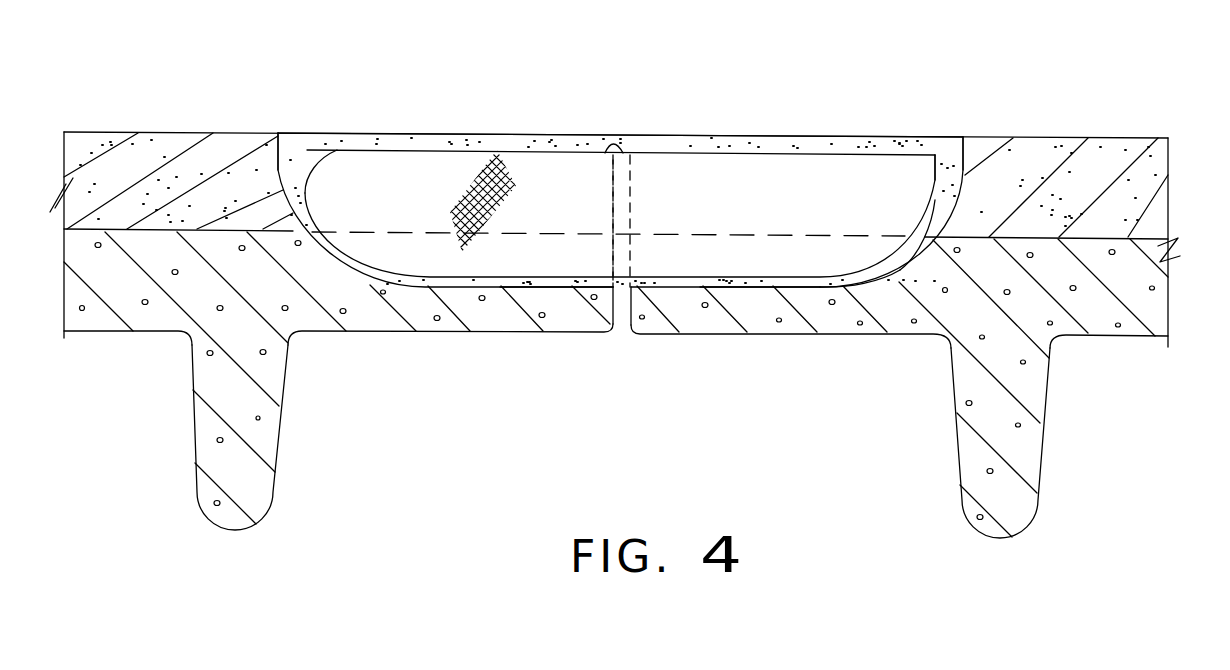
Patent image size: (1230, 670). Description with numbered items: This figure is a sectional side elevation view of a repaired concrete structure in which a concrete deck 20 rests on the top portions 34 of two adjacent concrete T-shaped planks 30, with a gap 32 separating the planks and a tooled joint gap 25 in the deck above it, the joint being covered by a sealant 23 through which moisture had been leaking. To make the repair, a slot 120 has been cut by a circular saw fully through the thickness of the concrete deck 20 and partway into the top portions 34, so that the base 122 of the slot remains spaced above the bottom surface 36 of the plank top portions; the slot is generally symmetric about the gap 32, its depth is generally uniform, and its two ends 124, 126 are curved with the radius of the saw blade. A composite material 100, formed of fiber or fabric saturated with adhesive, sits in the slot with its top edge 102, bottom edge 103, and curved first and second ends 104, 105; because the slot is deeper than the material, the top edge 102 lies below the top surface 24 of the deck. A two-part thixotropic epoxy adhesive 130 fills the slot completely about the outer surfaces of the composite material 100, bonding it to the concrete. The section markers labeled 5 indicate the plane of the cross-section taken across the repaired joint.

The concrete deck 20 is at (1112, 136).
The sealant 23 is at (623, 140).
The top surface of the concrete deck 24 is at (201, 132).
The tooled joint gap 25 is at (623, 207).
The T-shaped planks 30 is at (268, 493).
The gap 32 is at (620, 308).
The top portions of the T-shaped planks 34 is at (123, 290).
The bottom surface of the top portions 36 is at (395, 332).
The composite material 100 is at (752, 154).
The top edge of the composite material 102 is at (857, 154).
The bottom edge of the composite material 103 is at (562, 286).
The first end of the composite material 104 is at (293, 233).
The second end of the composite material 105 is at (912, 186).
The slot 120 is at (286, 155).
The base of the slot 122 is at (740, 290).
The first slot end 124 is at (333, 160).
The second slot end 126 is at (948, 165).
The adhesive 130 is at (878, 268).
The section line 5- 5 is at (537, 134).